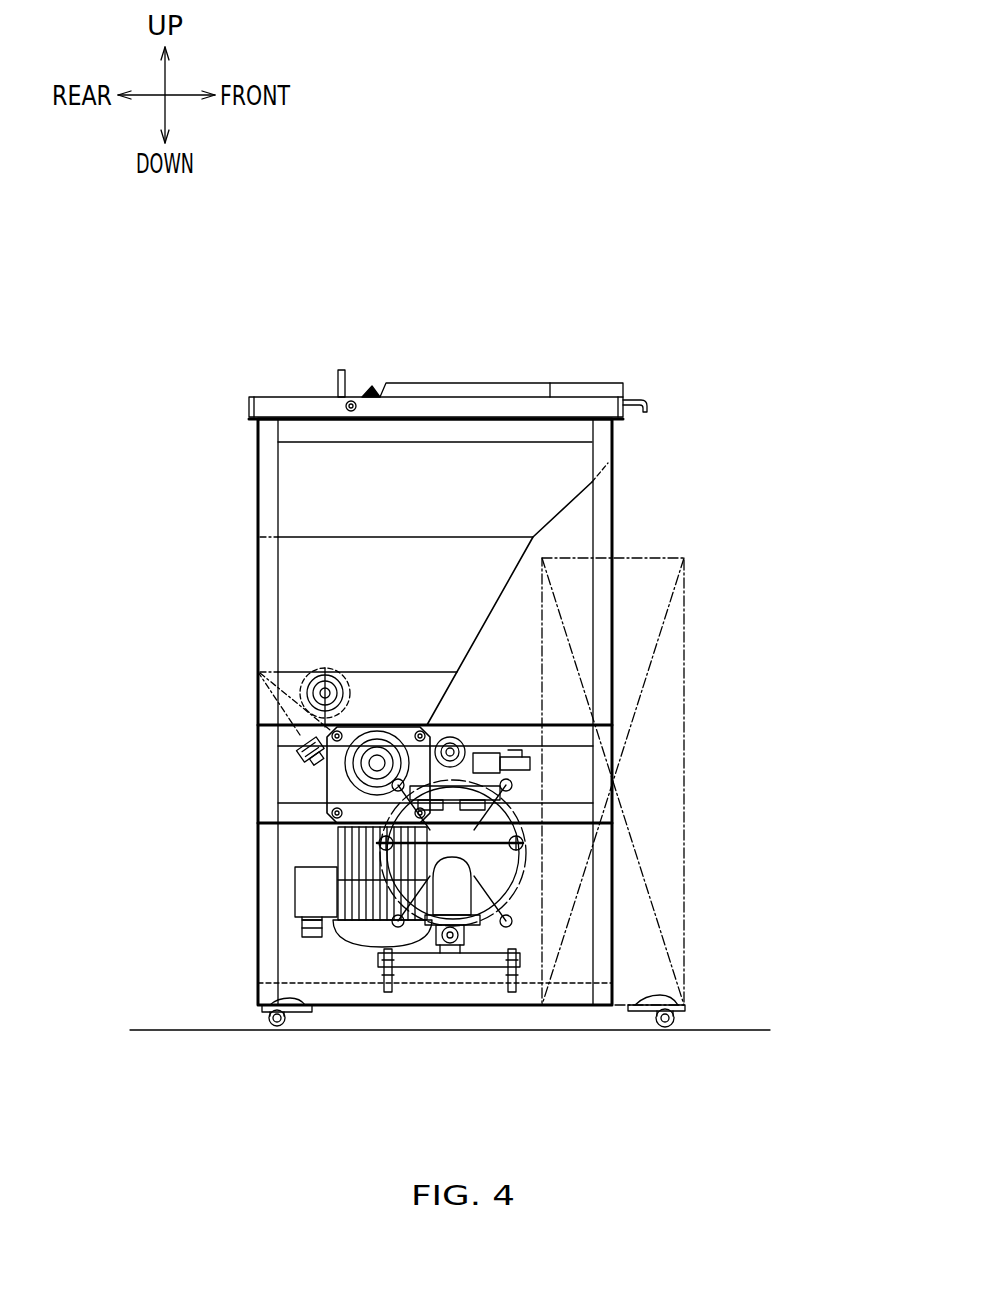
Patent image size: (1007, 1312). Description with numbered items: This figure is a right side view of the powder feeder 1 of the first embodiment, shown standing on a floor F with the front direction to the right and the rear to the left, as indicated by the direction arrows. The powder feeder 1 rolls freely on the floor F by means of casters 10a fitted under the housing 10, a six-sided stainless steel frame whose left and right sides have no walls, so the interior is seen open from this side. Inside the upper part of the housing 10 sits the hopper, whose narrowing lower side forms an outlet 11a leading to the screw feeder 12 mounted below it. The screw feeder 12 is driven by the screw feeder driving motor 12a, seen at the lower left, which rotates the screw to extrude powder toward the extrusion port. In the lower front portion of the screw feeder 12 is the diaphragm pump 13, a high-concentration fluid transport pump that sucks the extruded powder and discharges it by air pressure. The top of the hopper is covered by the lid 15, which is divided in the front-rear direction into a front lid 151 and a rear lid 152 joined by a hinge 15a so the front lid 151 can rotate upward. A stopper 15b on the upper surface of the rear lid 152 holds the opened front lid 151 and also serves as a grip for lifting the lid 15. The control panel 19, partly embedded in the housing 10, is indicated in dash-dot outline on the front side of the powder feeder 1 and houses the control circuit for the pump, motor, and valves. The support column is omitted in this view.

The powder feeder 1 is at (643, 243).
The housing 10 is at (258, 565).
The casters 10a is at (277, 1030).
The outlet 11a is at (327, 767).
The screw feeder 12 is at (337, 793).
The screw feeder driving motor 12a is at (353, 947).
The diaphragm pump 13 is at (512, 905).
The lid 15 is at (442, 382).
The hinge 15a is at (368, 390).
The stopper 15b is at (341, 368).
The front lid 151 is at (500, 382).
The rear lid 152 is at (282, 395).
The control panel 19 is at (684, 722).
The floor F is at (747, 1030).